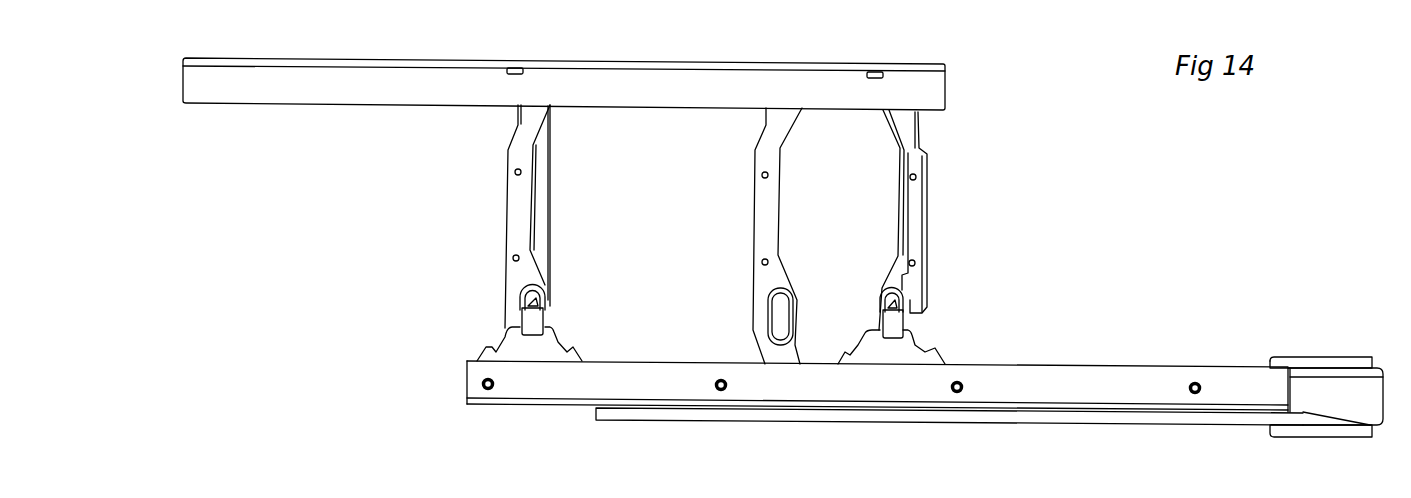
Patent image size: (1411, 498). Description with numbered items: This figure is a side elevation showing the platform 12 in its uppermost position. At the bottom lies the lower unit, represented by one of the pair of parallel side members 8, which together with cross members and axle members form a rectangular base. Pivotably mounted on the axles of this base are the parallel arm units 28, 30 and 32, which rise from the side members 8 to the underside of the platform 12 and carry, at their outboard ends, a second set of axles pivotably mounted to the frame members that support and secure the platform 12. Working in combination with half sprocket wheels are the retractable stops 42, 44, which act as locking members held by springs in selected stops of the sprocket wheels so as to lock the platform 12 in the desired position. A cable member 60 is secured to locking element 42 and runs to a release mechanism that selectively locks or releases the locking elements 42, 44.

The platform 12 is at (650, 58).
The side members 8 is at (1090, 366).
The parallel arm unit 28 is at (512, 207).
The parallel arm unit 30 is at (780, 211).
The parallel arm unit 32 is at (918, 215).
The cable member 60 is at (552, 216).
The retractable stop 42 is at (531, 326).
The retractable stop 44 is at (905, 328).